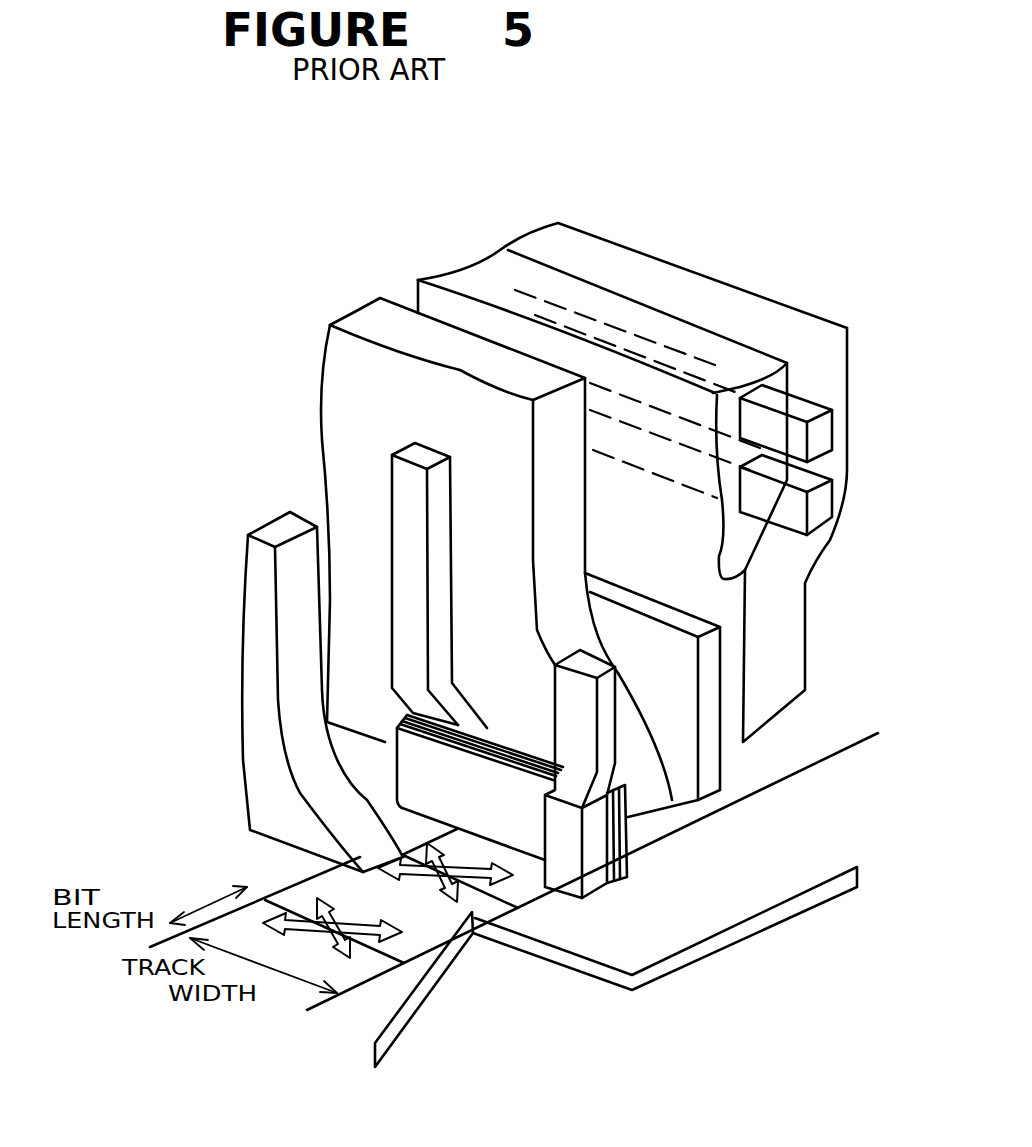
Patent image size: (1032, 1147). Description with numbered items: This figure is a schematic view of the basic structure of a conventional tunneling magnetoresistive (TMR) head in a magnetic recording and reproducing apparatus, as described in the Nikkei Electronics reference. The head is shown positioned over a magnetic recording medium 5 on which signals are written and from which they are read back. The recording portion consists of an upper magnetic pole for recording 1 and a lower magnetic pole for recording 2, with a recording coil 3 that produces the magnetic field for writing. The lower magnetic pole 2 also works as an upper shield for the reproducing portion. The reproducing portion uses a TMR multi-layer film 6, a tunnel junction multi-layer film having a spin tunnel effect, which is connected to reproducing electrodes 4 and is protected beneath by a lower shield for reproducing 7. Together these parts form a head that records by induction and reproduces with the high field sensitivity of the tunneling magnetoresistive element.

The upper magnetic pole for recording 1 is at (708, 710).
The lower magnetic pole for recording 2 is at (365, 332).
The recording coil 3 is at (820, 438).
The reproducing electrodes 4 is at (440, 625).
The magnetic recording medium 5 is at (748, 935).
The TMR multi-layer film 6 is at (523, 760).
The lower shield for reproducing 7 is at (278, 528).